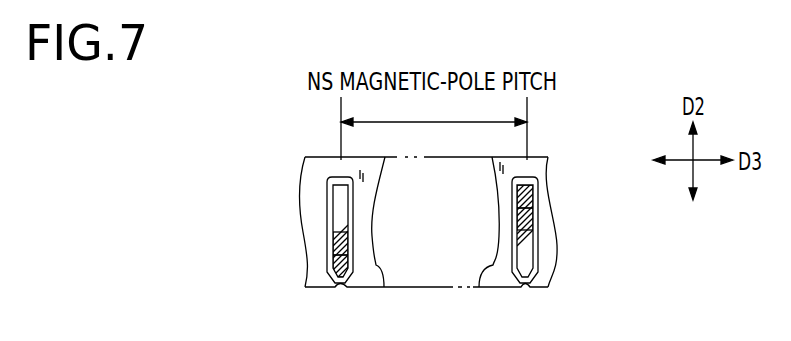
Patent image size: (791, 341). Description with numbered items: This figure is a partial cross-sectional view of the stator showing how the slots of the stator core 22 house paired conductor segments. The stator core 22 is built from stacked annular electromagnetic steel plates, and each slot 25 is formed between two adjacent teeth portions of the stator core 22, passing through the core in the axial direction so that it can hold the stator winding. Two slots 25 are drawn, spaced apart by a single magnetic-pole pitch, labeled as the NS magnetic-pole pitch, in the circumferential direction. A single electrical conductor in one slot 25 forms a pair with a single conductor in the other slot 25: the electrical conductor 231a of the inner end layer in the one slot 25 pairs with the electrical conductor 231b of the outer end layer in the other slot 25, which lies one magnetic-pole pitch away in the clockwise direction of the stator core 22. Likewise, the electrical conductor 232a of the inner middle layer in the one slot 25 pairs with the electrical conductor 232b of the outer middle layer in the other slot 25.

The stator core 22 is at (538, 177).
The slot 25 is at (337, 172).
The electrical conductor of the inner end layer 231a is at (337, 263).
The electrical conductor of the outer end layer 231b is at (525, 196).
The electrical conductor of the inner middle layer 232a is at (338, 242).
The electrical conductor of the outer middle layer 232b is at (526, 227).